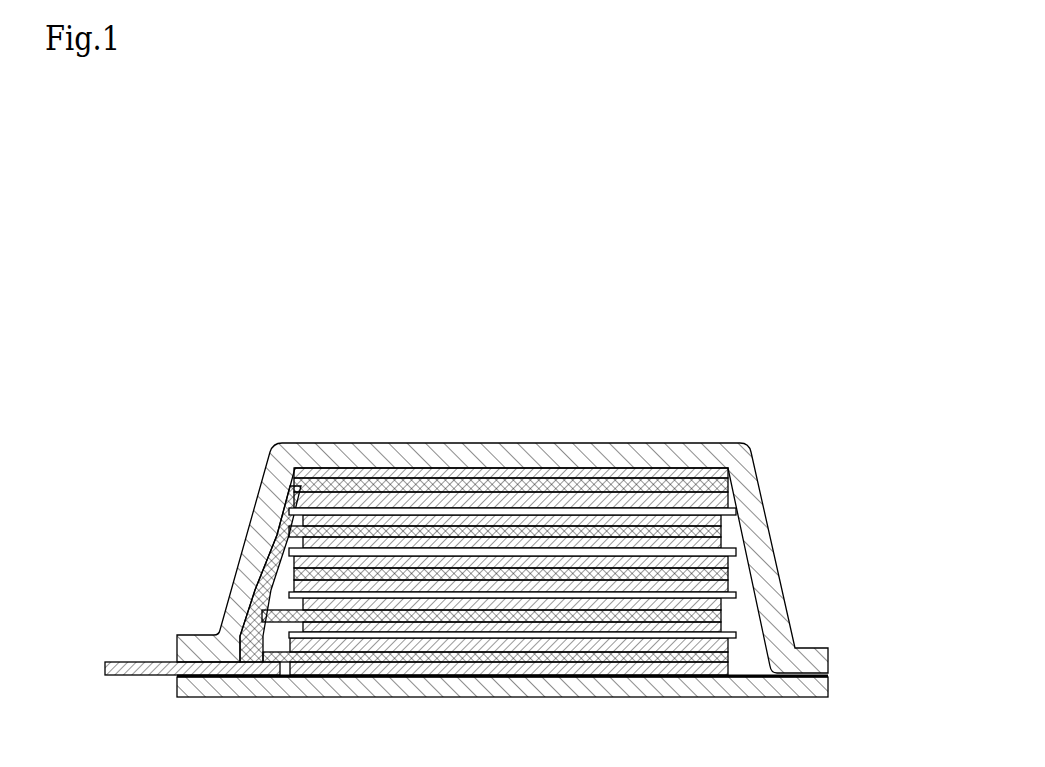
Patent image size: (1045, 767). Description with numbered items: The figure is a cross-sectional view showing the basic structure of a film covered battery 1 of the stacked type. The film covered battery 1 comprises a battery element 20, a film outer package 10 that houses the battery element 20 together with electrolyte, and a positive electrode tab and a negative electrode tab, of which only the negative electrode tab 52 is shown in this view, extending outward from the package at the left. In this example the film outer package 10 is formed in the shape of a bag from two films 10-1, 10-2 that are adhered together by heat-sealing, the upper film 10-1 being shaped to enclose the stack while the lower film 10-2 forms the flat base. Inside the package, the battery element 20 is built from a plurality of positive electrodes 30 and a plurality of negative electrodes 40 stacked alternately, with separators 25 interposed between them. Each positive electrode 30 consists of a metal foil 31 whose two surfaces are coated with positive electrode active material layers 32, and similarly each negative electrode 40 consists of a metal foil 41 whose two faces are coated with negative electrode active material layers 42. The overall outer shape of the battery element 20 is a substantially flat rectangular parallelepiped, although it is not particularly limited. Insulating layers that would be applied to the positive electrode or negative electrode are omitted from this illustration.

The film covered battery 1 is at (196, 409).
The film outer package 10 is at (555, 596).
The film 10-1 is at (813, 647).
The film 10-2 is at (529, 711).
The battery element 20 is at (383, 678).
The separator 25 is at (680, 594).
The positive electrode 30 is at (459, 533).
The metal foil 31 is at (495, 527).
The positive electrode active material layer 32 is at (545, 540).
The negative electrode 40 is at (552, 540).
The metal foil 41 is at (592, 487).
The negative electrode active material layer 42 is at (647, 500).
The negative electrode tab 52 is at (140, 662).